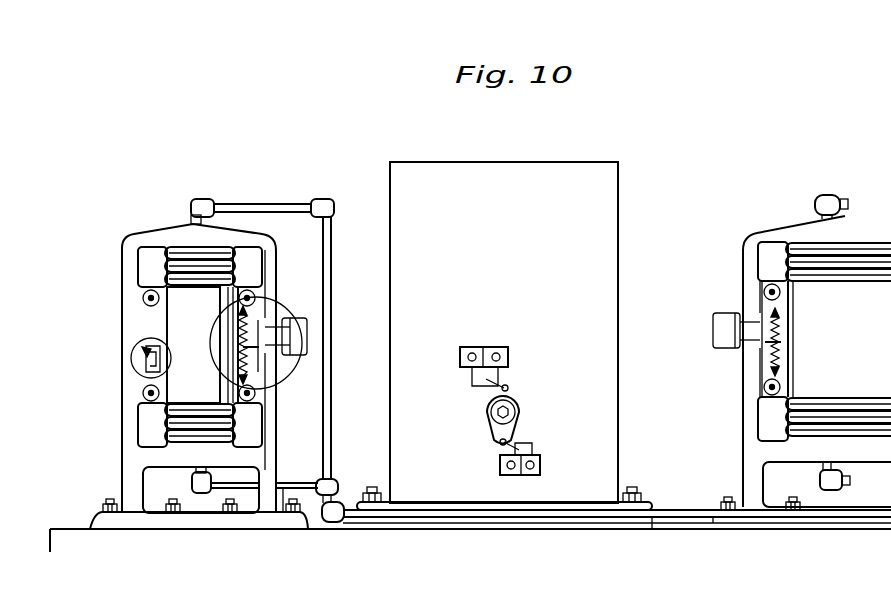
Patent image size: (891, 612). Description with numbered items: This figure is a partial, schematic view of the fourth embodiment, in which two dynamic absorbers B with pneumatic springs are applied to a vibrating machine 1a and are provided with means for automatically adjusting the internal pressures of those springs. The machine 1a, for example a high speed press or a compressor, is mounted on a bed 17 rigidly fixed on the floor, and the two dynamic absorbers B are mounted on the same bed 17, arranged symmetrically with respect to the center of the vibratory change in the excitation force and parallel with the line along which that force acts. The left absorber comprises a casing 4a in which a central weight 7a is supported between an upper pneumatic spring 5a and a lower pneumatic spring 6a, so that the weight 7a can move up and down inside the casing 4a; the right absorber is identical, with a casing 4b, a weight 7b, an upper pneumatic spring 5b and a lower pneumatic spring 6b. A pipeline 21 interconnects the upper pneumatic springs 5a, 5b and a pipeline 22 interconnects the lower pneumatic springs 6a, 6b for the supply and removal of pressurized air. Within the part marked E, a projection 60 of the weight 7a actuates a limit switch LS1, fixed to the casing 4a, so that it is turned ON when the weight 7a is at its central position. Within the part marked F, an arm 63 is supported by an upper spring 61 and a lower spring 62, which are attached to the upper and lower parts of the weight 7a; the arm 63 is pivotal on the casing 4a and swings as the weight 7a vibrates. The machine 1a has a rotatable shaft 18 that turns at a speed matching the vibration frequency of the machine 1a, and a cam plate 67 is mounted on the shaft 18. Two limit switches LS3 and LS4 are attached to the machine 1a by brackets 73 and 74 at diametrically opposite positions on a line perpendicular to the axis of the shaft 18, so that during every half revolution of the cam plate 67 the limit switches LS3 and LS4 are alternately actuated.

The bed 17 is at (92, 528).
The casing 4a is at (128, 333).
The casing 4b is at (750, 417).
The pipeline 21 is at (263, 203).
The pipeline 22 is at (242, 492).
The upper pneumatic spring 5a is at (138, 263).
The upper pneumatic spring 5b is at (760, 252).
The lower pneumatic spring 6a is at (168, 413).
The lower pneumatic spring 6b is at (790, 434).
The weight 7a is at (180, 313).
The weight 7b is at (803, 300).
The projection 60 is at (153, 344).
The upper spring 61 is at (247, 310).
The lower spring 62 is at (259, 400).
The arm 63 is at (258, 372).
The part E is at (150, 376).
The part F is at (276, 303).
The dynamic absorber B is at (162, 232).
The limit switch LS1 is at (136, 355).
The limit switch LS3 is at (470, 380).
The limit switch LS4 is at (538, 448).
The machine 1a is at (436, 161).
The bracket 73 is at (497, 347).
The bracket 74 is at (541, 468).
The shaft 18 is at (518, 405).
The cam plate 67 is at (489, 426).